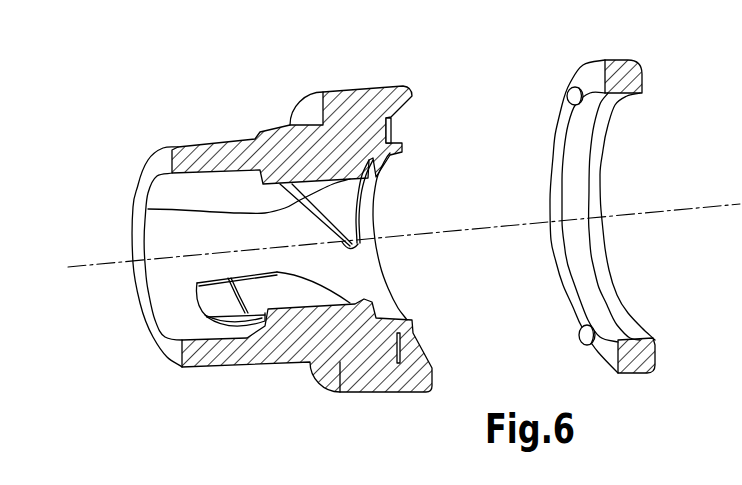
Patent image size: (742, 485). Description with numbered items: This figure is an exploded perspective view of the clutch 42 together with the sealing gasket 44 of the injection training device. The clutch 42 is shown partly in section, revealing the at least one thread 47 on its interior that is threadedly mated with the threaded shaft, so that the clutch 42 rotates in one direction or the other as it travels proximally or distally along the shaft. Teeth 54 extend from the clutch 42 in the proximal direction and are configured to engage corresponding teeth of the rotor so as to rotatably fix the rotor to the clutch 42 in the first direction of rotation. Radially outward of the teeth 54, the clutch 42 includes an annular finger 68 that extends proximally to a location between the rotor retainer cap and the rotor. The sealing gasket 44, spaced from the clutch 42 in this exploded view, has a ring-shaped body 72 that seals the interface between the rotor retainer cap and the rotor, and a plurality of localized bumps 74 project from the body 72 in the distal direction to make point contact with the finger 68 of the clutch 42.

The clutch 42 is at (204, 143).
The sealing gasket 44 is at (600, 176).
The thread 47 is at (150, 209).
The tooth 54 is at (395, 128).
The finger 68 is at (417, 97).
The ring-shaped body 72 is at (558, 272).
The localized bumps 74 is at (585, 338).